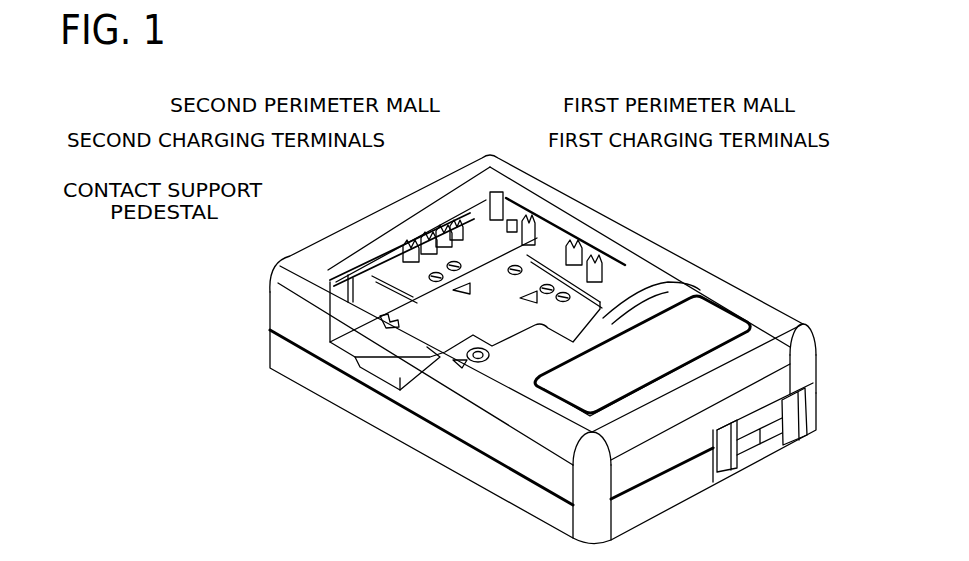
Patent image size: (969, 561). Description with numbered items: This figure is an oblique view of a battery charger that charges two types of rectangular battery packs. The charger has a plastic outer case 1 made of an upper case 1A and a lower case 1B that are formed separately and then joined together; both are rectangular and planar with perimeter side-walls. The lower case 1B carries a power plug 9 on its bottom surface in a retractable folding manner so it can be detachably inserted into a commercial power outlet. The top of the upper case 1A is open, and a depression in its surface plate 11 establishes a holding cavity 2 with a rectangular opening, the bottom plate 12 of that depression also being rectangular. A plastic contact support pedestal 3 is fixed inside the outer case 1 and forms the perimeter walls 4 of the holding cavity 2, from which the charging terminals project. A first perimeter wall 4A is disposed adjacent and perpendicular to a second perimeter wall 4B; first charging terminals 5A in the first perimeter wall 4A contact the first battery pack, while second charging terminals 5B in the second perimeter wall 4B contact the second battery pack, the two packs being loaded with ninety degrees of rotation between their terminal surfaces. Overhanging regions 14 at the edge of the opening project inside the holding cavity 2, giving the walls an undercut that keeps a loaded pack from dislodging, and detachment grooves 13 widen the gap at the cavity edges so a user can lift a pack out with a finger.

The outer case 1 is at (182, 242).
The upper case 1A is at (285, 318).
The lower case 1B is at (283, 352).
The holding cavity 2 is at (495, 325).
The contact support pedestal 3 is at (350, 248).
The perimeter walls 4 is at (557, 93).
The first perimeter wall 4A is at (555, 241).
The second perimeter wall 4B is at (461, 228).
The first charging terminals 5A is at (524, 232).
The second charging terminals 5B is at (420, 238).
The power plug 9 is at (774, 432).
The surface plate 11 is at (747, 299).
The bottom plate 12 is at (573, 342).
The detachment grooves 13 is at (670, 297).
The overhanging regions 14 is at (383, 250).